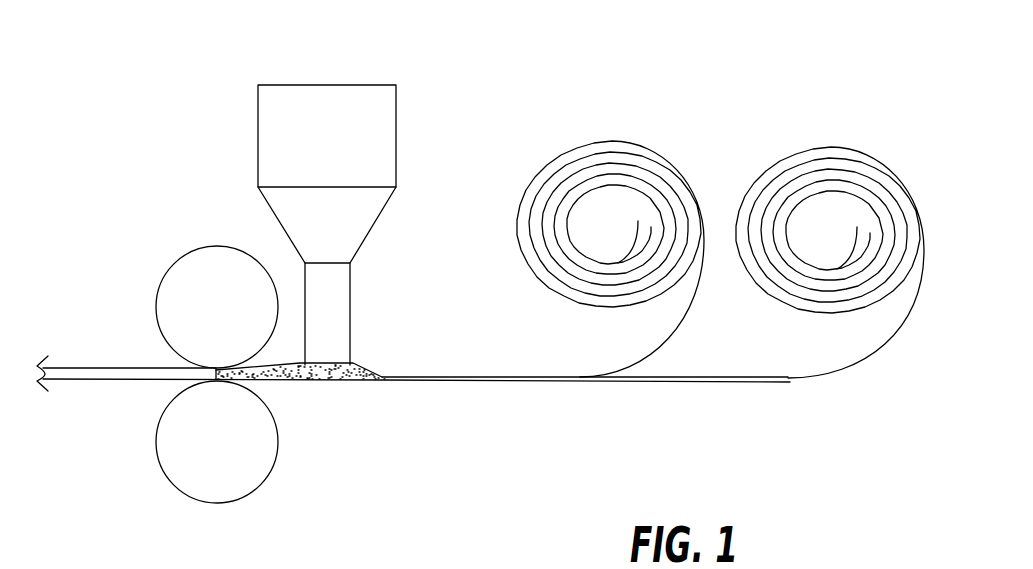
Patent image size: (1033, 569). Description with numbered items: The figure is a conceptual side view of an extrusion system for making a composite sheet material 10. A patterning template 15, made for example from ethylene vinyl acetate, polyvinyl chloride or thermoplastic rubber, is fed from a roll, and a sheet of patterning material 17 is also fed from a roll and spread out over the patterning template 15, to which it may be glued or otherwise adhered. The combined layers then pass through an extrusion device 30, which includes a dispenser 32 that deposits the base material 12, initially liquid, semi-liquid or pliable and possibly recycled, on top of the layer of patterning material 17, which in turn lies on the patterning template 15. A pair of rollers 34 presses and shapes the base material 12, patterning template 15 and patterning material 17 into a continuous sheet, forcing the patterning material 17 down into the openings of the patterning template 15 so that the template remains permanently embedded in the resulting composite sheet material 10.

The composite sheet material 10 is at (92, 367).
The base material 12 is at (364, 366).
The patterning template 15 is at (868, 355).
The patterning material 17 is at (667, 331).
The extrusion device 30 is at (442, 110).
The dispenser 32 is at (333, 305).
The rollers 34 is at (208, 248).